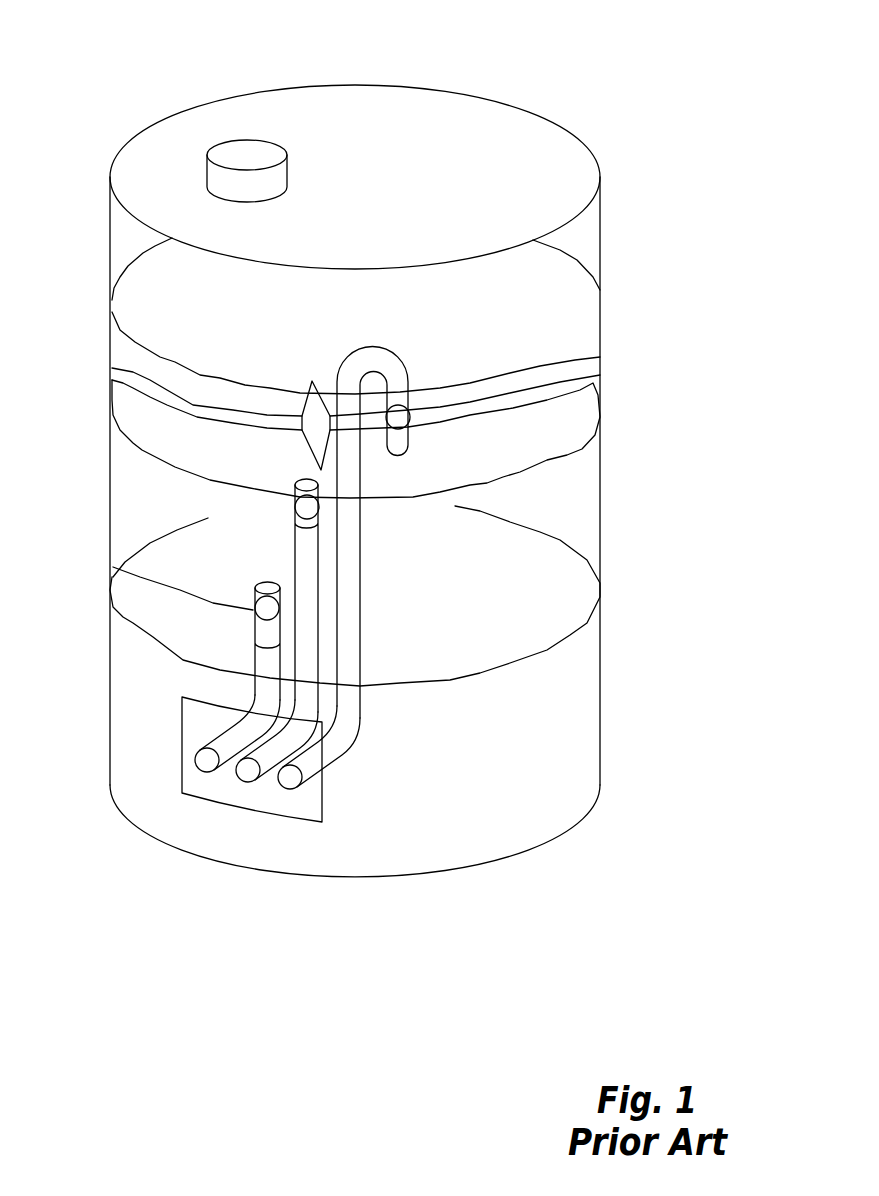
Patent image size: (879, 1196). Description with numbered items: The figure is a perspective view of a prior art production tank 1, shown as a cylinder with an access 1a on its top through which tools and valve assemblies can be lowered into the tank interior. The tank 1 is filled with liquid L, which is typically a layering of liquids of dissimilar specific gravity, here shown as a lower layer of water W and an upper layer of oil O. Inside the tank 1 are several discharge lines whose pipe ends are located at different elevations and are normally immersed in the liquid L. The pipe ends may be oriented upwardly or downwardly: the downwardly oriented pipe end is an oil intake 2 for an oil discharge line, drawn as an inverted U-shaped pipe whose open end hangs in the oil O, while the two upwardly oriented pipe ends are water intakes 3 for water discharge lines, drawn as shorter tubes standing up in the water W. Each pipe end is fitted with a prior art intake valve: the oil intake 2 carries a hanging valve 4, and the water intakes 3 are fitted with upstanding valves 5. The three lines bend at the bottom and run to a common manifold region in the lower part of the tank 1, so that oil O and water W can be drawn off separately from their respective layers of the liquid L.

The production tank 1 is at (305, 481).
The access 1a is at (172, 118).
The oil intake 2 is at (476, 532).
The water intakes 3 is at (192, 717).
The hanging valve 4 is at (540, 413).
The upstanding valves 5 is at (151, 586).
The liquid L is at (401, 460).
The oil O is at (228, 453).
The water W is at (455, 623).